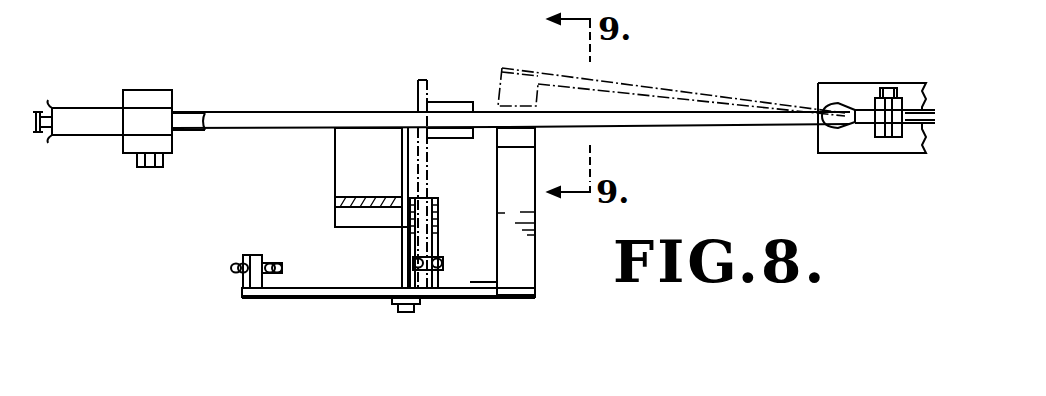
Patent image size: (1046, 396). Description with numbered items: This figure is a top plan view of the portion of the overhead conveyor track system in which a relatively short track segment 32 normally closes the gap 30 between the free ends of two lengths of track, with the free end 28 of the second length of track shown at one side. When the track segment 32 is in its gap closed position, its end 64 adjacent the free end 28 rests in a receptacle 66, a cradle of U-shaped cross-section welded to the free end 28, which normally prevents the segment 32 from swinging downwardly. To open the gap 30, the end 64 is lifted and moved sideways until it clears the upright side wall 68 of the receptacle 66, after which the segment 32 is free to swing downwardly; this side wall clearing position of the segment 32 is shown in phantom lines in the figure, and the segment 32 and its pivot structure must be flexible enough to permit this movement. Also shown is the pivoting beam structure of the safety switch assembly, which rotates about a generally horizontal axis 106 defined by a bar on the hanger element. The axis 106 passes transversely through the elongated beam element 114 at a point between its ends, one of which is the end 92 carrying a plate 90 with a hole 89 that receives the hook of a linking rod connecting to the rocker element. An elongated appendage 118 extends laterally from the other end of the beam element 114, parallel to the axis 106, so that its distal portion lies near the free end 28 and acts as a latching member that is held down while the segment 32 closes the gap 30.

The free end 28 is at (418, 127).
The gap 30 is at (535, 141).
The track segment 32 is at (669, 119).
The end of track segment 64 is at (440, 116).
The receptacle 66 is at (455, 138).
The upright side wall 68 is at (468, 104).
The hole 89 is at (245, 255).
The plate 90 is at (243, 285).
The end of beam structure 92 is at (275, 291).
The horizontal axis 106 is at (388, 317).
The beam element 114 is at (486, 290).
The appendage 118 is at (532, 244).